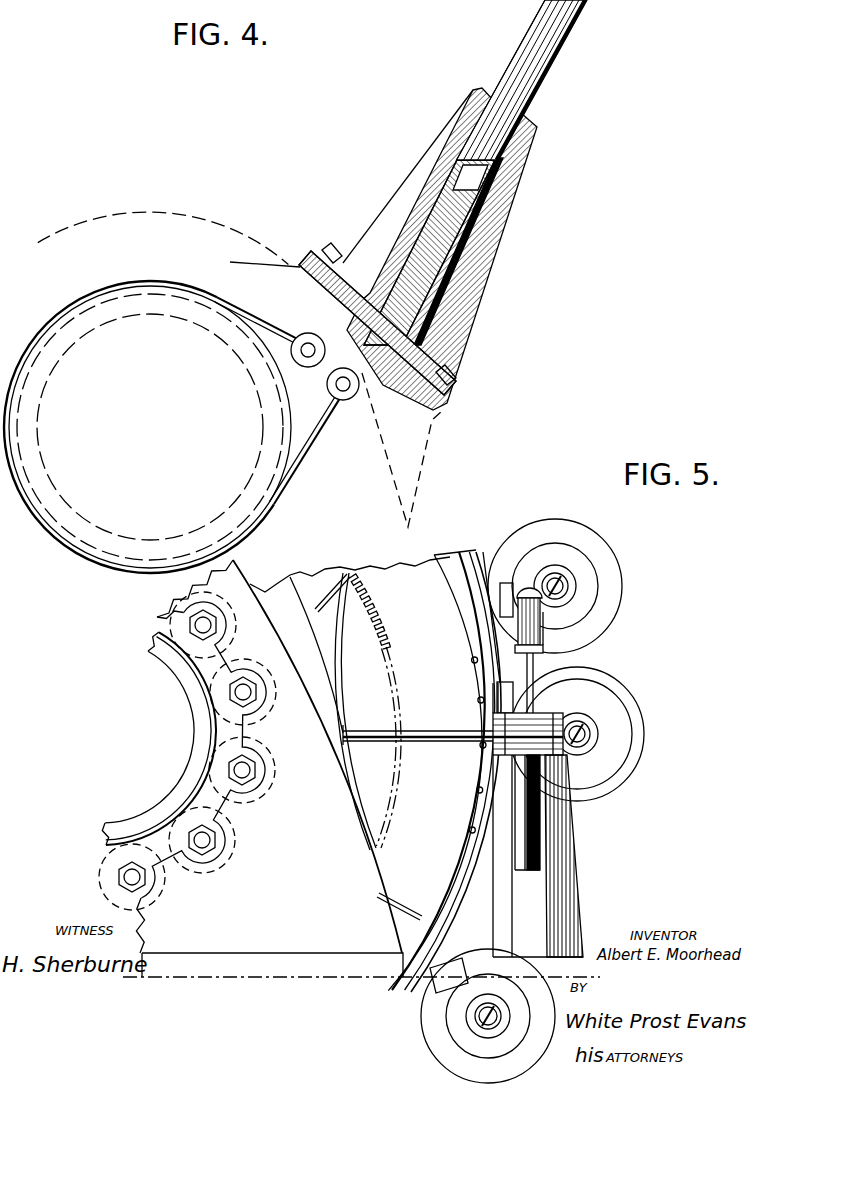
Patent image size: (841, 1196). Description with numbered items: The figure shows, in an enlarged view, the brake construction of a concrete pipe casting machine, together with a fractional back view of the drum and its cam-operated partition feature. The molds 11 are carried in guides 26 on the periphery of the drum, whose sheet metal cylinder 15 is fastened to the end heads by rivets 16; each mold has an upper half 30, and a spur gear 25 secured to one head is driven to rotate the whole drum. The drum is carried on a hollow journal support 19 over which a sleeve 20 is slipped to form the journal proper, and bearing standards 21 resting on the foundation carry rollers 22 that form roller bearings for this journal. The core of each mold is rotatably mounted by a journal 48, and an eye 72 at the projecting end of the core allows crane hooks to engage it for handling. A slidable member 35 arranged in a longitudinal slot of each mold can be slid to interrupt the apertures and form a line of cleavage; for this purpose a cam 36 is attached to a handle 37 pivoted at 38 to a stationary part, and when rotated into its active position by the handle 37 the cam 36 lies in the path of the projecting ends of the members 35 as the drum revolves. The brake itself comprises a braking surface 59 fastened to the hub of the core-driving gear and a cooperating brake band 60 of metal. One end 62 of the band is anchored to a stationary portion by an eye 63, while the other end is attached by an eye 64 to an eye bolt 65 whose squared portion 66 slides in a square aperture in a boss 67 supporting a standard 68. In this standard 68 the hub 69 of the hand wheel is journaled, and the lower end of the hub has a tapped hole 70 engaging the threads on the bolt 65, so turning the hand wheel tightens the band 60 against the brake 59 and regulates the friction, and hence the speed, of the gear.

In FIG. 5, the molds 11 is at (613, 710).
In FIG. 5, the sheet metal cylinder 15 is at (480, 623).
In FIG. 5, the rivets 16 is at (466, 568).
In FIG. 4, the journal support 19 is at (170, 313).
In FIG. 5, the journal support 19 is at (193, 692).
In FIG. 5, the sleeves 20 is at (212, 740).
In FIG. 4, the bearing standards 21 is at (232, 224).
In FIG. 5, the bearing standards 21 is at (312, 833).
In FIG. 5, the rollers 22 is at (235, 628).
In FIG. 5, the spur gear 25 is at (388, 675).
In FIG. 5, the guides 26 is at (472, 553).
In FIG. 5, the upper half of mold 30 is at (617, 603).
In FIG. 5, the slidable member 35 is at (510, 590).
In FIG. 5, the cam 36 is at (570, 807).
In FIG. 5, the handle 37 is at (543, 623).
In FIG. 5, the pivot 38 is at (500, 737).
In FIG. 5, the journal 48 is at (560, 587).
In FIG. 4, the braking surface 59 is at (217, 307).
In FIG. 4, the brake band 60 is at (270, 505).
In FIG. 4, the end of brake band 62 is at (263, 330).
In FIG. 4, the eye 63 is at (302, 340).
In FIG. 4, the eye 64 is at (332, 387).
In FIG. 4, the eye bolt 65 is at (423, 248).
In FIG. 4, the squared portion 66 is at (392, 343).
In FIG. 4, the boss 67 is at (377, 385).
In FIG. 4, the standard 68 is at (460, 283).
In FIG. 4, the hub 69 is at (557, 43).
In FIG. 4, the tapped hole 70 is at (453, 200).
In FIG. 5, the eyes 72 is at (553, 582).